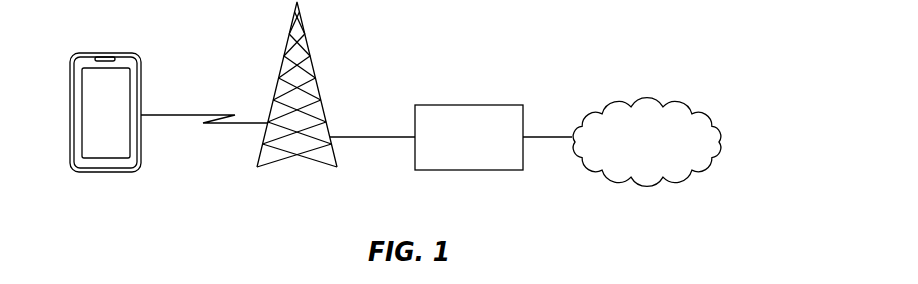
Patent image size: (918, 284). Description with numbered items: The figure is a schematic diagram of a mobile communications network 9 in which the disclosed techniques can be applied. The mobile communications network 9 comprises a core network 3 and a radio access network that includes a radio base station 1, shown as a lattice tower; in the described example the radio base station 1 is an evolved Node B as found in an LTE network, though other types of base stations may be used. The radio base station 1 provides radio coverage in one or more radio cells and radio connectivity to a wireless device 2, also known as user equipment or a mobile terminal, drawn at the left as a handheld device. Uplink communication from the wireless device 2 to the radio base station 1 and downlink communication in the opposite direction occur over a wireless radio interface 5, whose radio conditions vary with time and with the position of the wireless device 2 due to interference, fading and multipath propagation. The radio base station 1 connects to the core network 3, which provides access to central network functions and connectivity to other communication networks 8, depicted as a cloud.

The radio base station 1 is at (315, 65).
The wireless device 2 is at (117, 53).
The core network 3 is at (464, 160).
The wireless radio interface 5 is at (187, 115).
The other communication networks 8 is at (641, 149).
The mobile communications network 9 is at (697, 53).